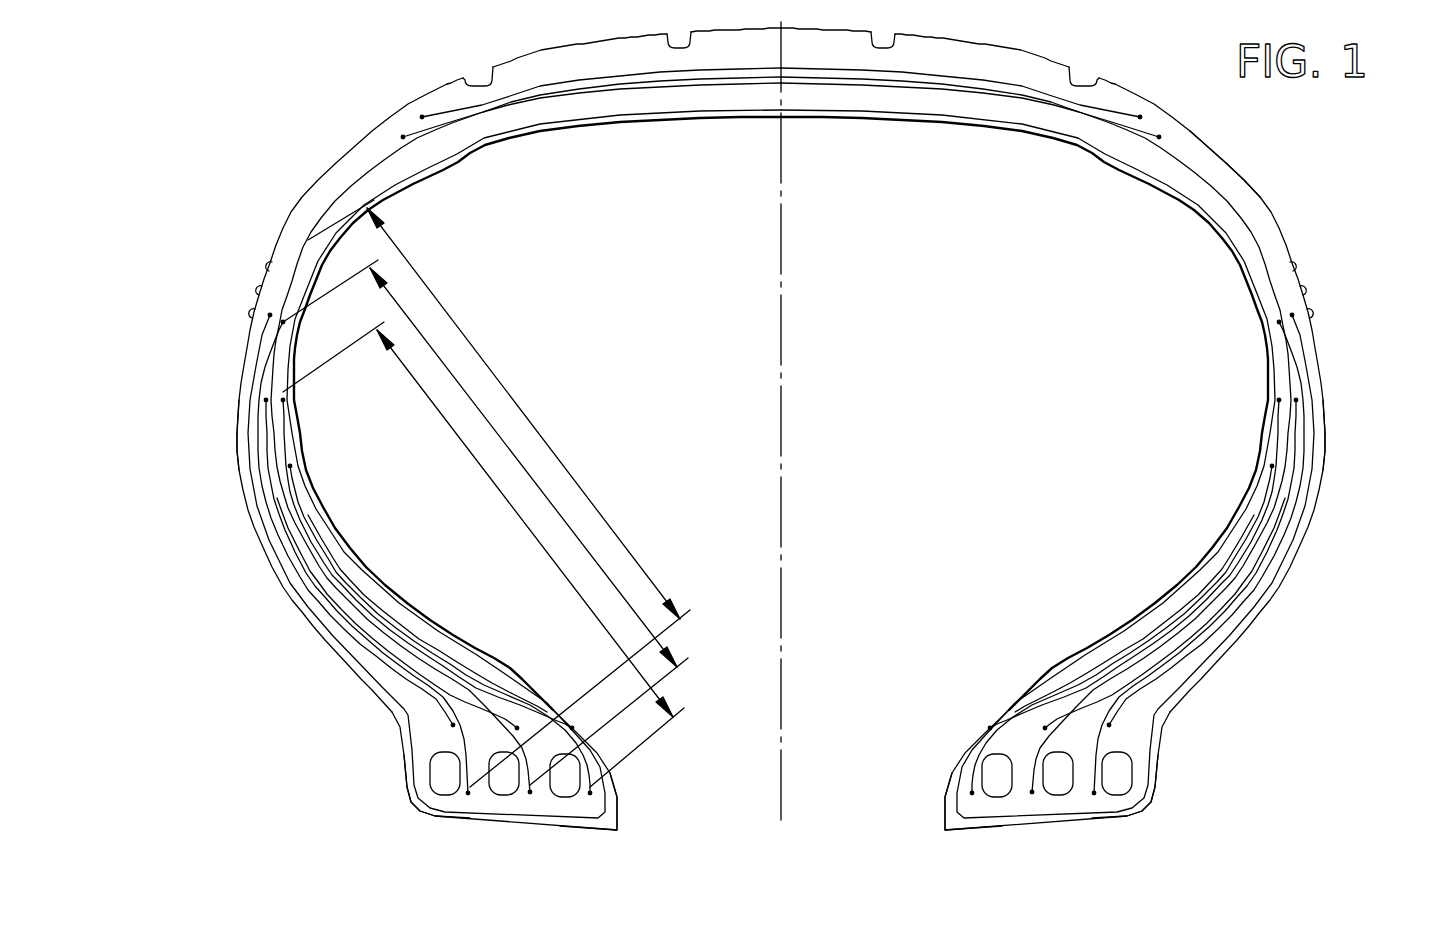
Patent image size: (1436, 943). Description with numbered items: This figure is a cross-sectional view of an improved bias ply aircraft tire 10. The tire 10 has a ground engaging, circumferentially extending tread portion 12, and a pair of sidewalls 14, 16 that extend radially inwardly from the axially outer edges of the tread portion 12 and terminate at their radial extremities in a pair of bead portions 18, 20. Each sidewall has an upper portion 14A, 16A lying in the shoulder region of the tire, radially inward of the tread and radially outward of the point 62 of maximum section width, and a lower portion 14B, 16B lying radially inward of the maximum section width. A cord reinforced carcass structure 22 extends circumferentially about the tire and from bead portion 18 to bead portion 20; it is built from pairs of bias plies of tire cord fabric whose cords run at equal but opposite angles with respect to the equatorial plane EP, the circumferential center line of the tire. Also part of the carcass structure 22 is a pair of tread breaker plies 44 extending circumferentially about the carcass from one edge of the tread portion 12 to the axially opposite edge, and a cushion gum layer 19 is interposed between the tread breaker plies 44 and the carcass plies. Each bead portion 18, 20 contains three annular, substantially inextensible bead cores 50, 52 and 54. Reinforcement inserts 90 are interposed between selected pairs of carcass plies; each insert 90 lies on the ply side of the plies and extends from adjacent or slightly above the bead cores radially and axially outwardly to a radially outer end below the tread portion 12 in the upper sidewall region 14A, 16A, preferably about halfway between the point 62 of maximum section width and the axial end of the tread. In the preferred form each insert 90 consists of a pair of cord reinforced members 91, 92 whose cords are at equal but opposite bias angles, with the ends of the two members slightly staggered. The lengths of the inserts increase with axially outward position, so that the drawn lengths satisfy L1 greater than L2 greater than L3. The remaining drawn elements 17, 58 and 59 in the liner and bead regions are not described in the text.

The tire 10 is at (300, 128).
The tread portion 12 is at (968, 50).
The sidewall 14 is at (236, 378).
The upper portion of sidewall 14A is at (330, 168).
The lower portion of sidewall 14B is at (364, 683).
The sidewall 16 is at (1328, 377).
The upper portion of sidewall 16A is at (1223, 153).
The lower portion of sidewall 16B is at (1196, 688).
The innerliner 17 is at (1037, 134).
The bead portion 18 is at (393, 779).
The cushion gum layer 19 is at (842, 80).
The bead portion 20 is at (1165, 778).
The cord reinforced carcass structure 22 is at (1243, 193).
The tread breaker plies 44 is at (612, 76).
The bead core 50 is at (564, 785).
The bead core 52 is at (503, 785).
The bead core 54 is at (442, 785).
The bead toe 58 is at (618, 828).
The bead heel 59 is at (408, 801).
The point of maximum section width 62 is at (237, 438).
The reinforcement insert 90 is at (371, 600).
The cord reinforced member 91 is at (453, 667).
The cord reinforced member 92 is at (495, 710).
The equatorial plane EP is at (778, 440).
The length of insert L1 is at (499, 493).
The length of insert L2 is at (485, 522).
The length of insert L3 is at (483, 554).